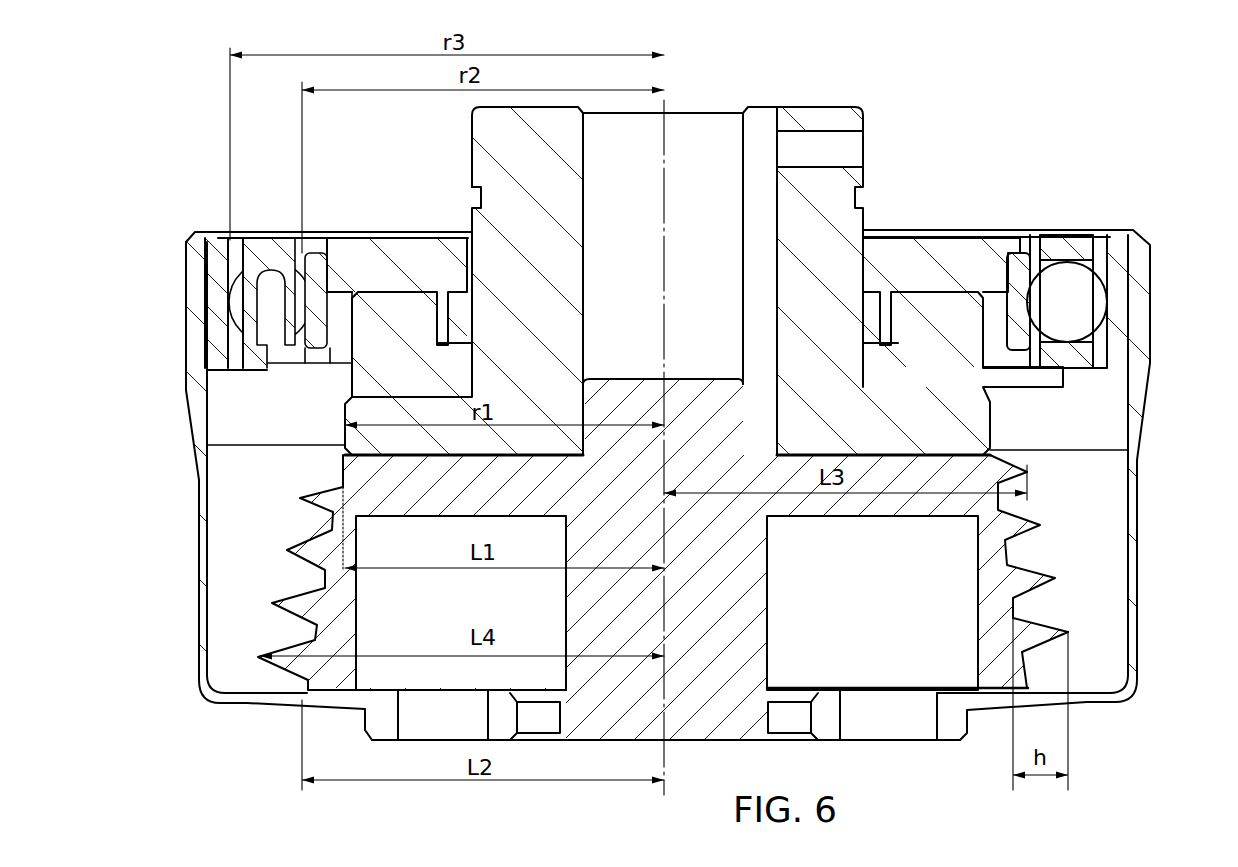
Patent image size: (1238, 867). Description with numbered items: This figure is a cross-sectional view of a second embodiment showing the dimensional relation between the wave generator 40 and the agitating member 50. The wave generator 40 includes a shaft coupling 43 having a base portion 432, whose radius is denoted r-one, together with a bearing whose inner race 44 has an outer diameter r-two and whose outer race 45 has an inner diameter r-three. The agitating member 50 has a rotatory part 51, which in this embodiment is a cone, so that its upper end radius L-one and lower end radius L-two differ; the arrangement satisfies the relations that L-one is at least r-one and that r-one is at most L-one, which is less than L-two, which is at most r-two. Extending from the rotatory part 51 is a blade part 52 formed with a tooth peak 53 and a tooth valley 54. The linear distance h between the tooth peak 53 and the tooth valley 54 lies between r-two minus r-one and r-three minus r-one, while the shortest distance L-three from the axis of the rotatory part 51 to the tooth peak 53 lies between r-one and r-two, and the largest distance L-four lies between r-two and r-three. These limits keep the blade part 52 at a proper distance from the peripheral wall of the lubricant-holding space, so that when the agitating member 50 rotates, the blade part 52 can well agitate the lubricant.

The wave generator 40 is at (1020, 215).
The shaft coupling 43 is at (838, 100).
The inner race 44 is at (316, 272).
The outer race 45 is at (215, 248).
The base portion 432 is at (423, 412).
The agitating member 50 is at (1045, 462).
The rotatory part 51 is at (948, 480).
The blade part 52 is at (1045, 640).
The tooth peak 53 is at (1068, 633).
The tooth valley 54 is at (1035, 628).